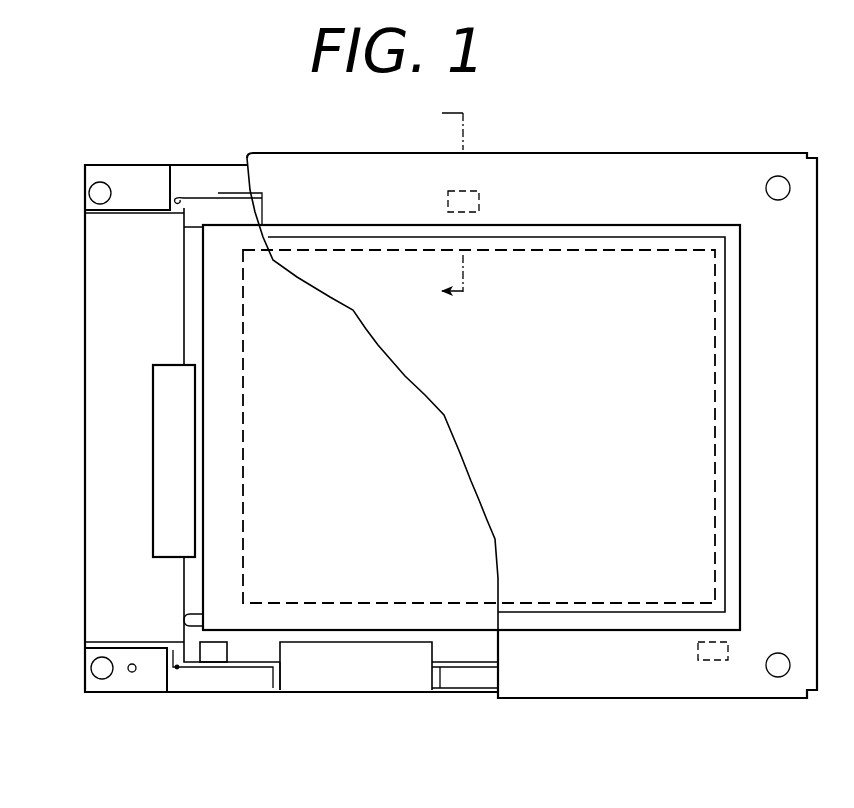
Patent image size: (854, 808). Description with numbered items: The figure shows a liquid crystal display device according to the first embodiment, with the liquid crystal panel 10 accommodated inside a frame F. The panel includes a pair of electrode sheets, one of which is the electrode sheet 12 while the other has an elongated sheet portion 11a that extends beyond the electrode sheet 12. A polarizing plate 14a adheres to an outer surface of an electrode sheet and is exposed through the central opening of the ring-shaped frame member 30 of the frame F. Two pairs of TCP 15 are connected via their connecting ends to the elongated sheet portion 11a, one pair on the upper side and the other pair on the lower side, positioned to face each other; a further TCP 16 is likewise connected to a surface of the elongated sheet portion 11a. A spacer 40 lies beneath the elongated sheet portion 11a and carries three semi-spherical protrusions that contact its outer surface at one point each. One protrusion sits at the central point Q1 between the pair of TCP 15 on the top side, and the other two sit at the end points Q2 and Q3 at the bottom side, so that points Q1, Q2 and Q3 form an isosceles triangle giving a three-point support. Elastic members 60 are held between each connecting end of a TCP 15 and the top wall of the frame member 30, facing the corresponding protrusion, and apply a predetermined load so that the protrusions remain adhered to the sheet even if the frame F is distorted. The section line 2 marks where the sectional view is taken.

The liquid crystal panel 10 is at (150, 595).
The elongated sheet portion 11a is at (234, 210).
The electrode sheet 12 is at (322, 618).
The polarizing plate 14a is at (466, 445).
The TCP (tape carrier package) 15 is at (363, 672).
The TCP 16 is at (153, 472).
The frame member 30 is at (625, 165).
The spacer 40 is at (478, 683).
The elastic member 60 is at (478, 191).
The central point Q1 is at (449, 202).
The end point Q2 is at (217, 660).
The end point Q3 is at (728, 661).
The frame F is at (738, 128).
The section line 2- 2 is at (439, 203).